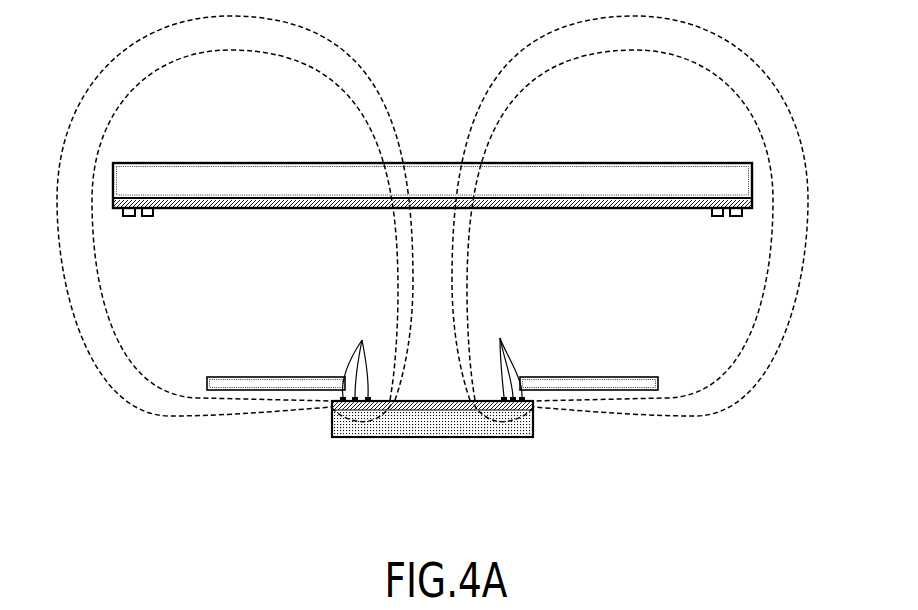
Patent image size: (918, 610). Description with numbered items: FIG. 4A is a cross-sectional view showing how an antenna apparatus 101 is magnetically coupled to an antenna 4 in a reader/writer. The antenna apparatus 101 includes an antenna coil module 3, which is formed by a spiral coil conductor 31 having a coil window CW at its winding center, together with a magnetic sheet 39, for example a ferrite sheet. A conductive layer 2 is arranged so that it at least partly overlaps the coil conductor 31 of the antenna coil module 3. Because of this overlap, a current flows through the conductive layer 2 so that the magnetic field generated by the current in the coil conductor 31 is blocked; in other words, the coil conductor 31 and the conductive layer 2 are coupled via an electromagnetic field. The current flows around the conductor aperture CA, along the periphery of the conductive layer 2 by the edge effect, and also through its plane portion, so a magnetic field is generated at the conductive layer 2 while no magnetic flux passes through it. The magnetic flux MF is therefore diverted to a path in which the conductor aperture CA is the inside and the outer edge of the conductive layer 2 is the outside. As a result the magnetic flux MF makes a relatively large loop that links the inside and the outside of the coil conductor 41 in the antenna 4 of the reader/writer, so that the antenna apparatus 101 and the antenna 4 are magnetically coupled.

The antenna 4 is at (763, 140).
The coil conductor 41 is at (133, 216).
The conductive layer 2 is at (267, 377).
The coil conductor 31 is at (362, 340).
The antenna coil module 3 is at (464, 458).
The magnetic sheet 39 is at (437, 430).
The antenna apparatus 101 is at (132, 461).
The magnetic flux MF is at (75, 340).
The coil window CW is at (428, 390).
The conductor aperture CA is at (513, 371).